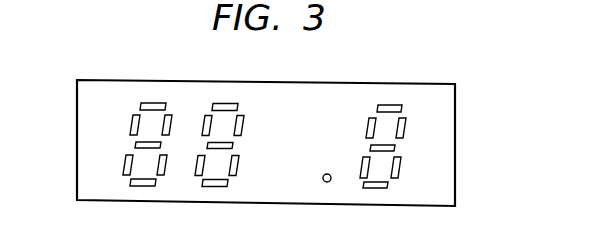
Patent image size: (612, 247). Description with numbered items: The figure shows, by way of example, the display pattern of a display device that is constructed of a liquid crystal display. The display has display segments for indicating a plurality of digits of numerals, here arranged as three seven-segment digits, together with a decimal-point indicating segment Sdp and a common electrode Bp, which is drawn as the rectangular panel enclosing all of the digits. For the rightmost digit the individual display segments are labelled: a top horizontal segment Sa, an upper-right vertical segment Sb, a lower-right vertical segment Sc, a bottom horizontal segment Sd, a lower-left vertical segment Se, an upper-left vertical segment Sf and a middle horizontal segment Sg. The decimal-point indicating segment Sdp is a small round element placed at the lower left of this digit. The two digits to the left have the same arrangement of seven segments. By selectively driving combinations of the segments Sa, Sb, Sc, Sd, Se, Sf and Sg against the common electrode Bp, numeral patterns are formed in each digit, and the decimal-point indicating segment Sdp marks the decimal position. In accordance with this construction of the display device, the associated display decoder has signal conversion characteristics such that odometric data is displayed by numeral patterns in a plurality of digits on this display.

The common electrode Bp is at (335, 81).
The display segment Sa is at (394, 104).
The display segment Sb is at (405, 128).
The display segment Sc is at (400, 167).
The display segment Sd is at (388, 185).
The display segment Se is at (361, 167).
The display segment Sf is at (366, 131).
The display segment Sg is at (395, 148).
The decimal-point indicating segment Sdp is at (323, 179).